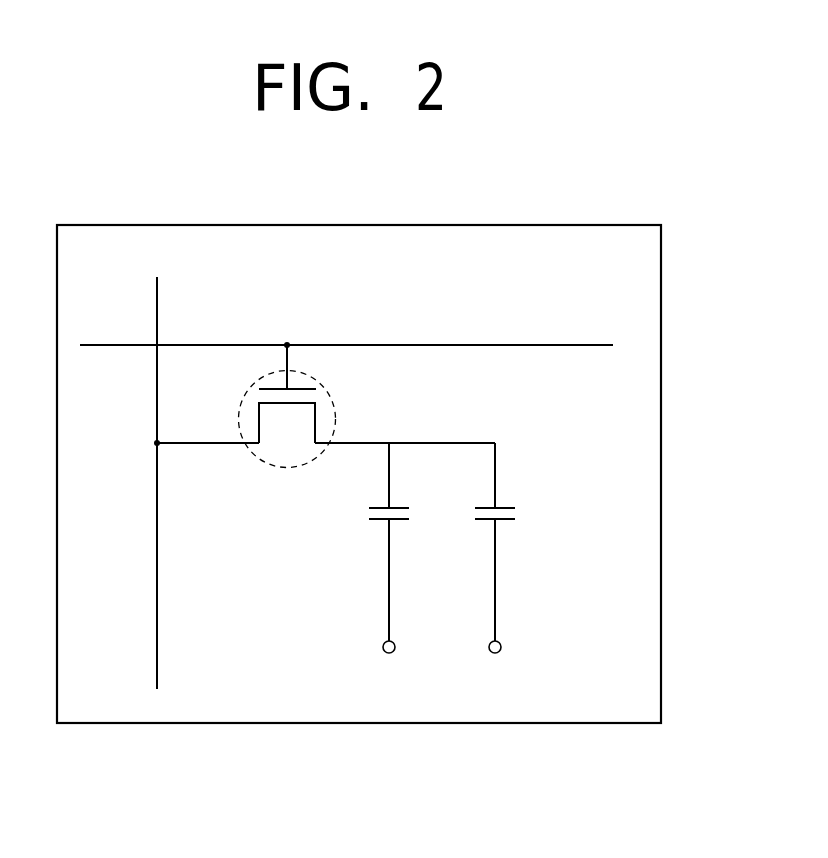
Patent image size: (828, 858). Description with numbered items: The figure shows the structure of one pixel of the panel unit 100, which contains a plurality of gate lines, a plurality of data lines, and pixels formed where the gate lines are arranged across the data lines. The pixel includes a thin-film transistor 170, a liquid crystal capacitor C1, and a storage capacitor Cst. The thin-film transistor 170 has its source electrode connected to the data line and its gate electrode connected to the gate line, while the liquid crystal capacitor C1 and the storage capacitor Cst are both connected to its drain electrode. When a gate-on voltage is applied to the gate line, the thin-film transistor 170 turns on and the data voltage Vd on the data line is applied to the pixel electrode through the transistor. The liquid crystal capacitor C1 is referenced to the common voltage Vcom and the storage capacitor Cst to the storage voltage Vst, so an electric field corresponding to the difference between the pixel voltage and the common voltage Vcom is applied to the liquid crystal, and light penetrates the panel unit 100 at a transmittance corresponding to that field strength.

The panel unit 100 is at (661, 272).
The thin-film transistor 170 is at (336, 404).
The data voltage Vd is at (193, 437).
The liquid crystal capacitor C1 is at (404, 542).
The storage capacitor Cst is at (514, 542).
The common voltage Vcom is at (394, 662).
The storage voltage Vst is at (495, 662).